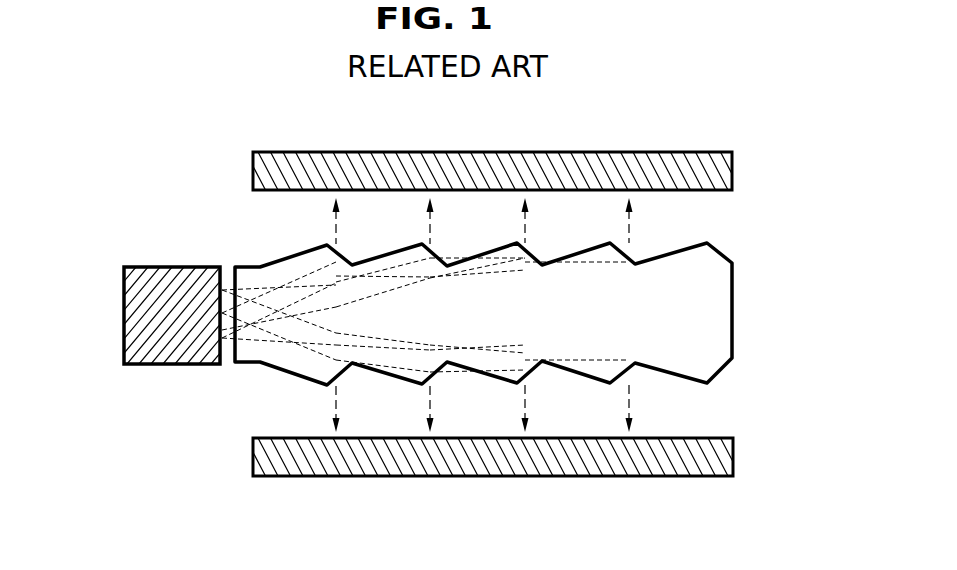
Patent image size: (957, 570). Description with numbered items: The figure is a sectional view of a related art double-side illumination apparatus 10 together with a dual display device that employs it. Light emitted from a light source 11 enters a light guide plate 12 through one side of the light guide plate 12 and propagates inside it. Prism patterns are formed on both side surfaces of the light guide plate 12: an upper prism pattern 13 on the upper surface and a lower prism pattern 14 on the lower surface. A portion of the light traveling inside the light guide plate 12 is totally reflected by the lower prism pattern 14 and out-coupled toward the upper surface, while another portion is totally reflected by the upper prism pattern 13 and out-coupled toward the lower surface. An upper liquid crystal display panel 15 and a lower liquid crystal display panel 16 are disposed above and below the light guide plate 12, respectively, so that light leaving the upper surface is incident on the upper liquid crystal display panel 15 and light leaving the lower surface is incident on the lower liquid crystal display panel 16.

The double-side illumination apparatus 10 is at (539, 314).
The light source 11 is at (132, 317).
The light guide plate 12 is at (712, 357).
The upper prism pattern 13 is at (520, 241).
The lower prism pattern 14 is at (519, 386).
The upper liquid crystal display panel 15 is at (732, 168).
The lower liquid crystal display panel 16 is at (733, 455).